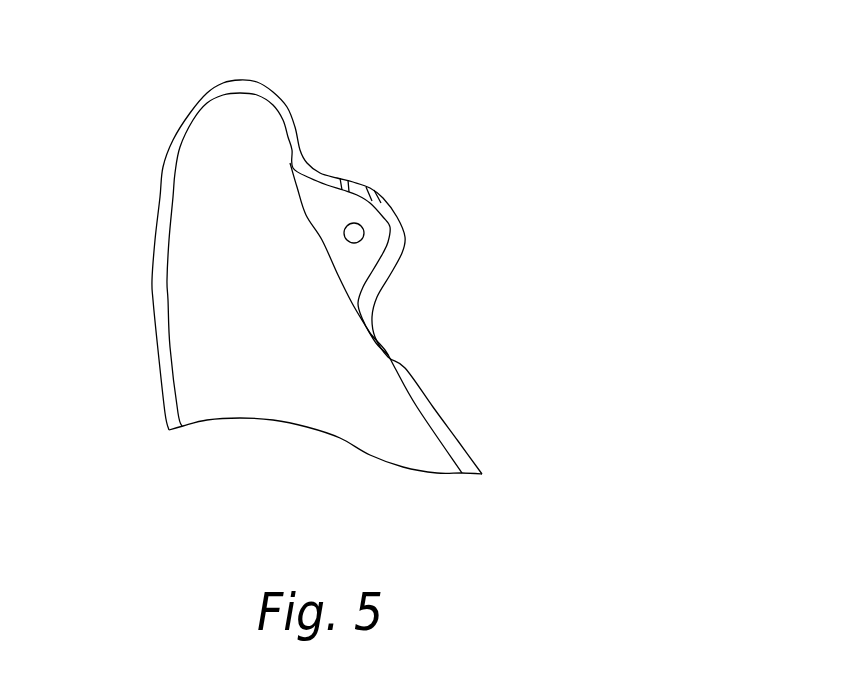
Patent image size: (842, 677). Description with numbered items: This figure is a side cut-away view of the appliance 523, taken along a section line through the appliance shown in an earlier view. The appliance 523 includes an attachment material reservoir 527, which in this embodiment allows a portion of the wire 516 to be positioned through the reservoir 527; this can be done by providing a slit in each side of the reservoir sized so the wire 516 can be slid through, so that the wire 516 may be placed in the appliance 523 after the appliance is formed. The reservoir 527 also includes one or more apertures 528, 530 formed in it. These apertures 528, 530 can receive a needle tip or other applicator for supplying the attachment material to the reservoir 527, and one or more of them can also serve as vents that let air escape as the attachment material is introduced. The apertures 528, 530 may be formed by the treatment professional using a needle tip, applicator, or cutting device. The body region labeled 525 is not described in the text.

The appliance 523 is at (240, 80).
The body panel 525 is at (198, 215).
The attachment material reservoir 527 is at (365, 263).
The wire 516 is at (343, 234).
The aperture 530 is at (344, 178).
The aperture 528 is at (378, 188).